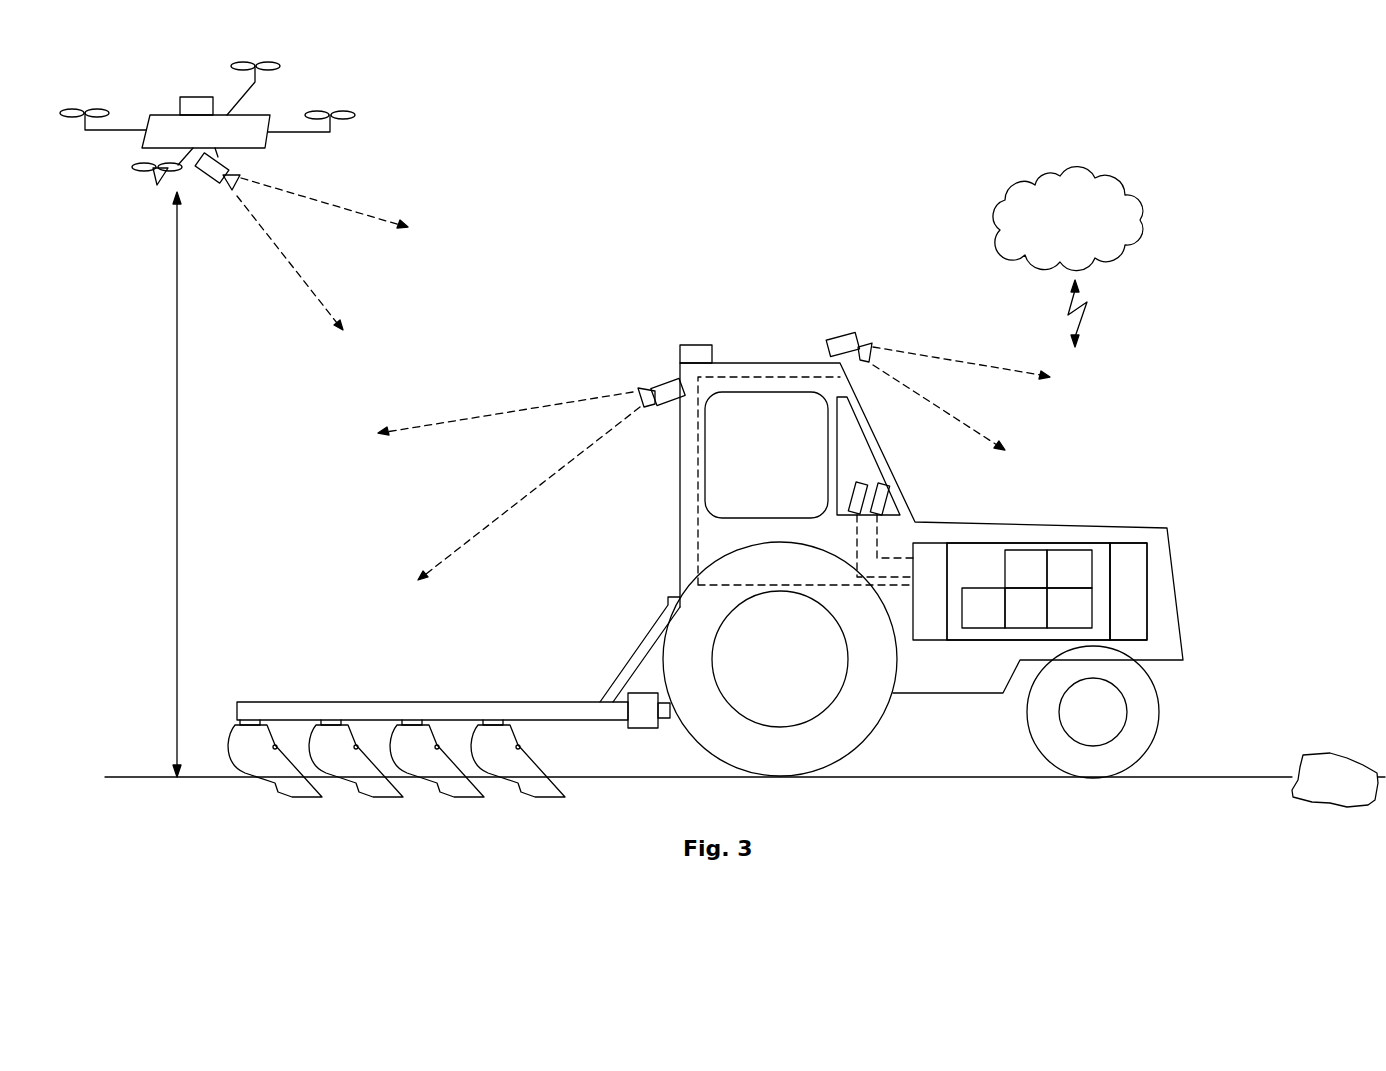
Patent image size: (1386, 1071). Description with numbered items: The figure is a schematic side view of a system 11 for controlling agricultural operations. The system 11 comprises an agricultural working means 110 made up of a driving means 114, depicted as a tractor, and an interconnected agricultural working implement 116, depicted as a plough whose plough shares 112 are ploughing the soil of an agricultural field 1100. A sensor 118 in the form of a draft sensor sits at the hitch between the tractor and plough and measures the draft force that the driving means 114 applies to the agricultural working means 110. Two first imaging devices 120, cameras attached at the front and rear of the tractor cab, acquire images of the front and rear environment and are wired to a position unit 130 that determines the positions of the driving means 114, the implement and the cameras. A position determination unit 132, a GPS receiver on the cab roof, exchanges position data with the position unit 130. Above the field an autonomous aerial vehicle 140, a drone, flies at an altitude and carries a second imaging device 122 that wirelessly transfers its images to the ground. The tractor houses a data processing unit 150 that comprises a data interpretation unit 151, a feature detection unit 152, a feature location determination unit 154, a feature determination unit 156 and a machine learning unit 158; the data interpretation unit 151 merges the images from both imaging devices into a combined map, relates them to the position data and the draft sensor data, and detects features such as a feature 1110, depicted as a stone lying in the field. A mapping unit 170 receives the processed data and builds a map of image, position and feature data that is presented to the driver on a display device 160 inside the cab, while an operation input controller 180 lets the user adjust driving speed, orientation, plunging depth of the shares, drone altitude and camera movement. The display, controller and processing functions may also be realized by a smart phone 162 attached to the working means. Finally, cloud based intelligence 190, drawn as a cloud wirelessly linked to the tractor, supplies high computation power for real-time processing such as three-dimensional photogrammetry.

The system 11 is at (712, 108).
The agricultural working means 110 is at (661, 279).
The plough shares 112 is at (286, 766).
The driving means 114 is at (932, 662).
The agricultural working implement 116 is at (443, 708).
The sensor 118 is at (645, 713).
The first imaging devices 120 is at (663, 392).
The second imaging device 122 is at (217, 168).
The position unit 130 is at (1030, 591).
The position determination unit 132 is at (190, 103).
The autonomous aerial vehicle 140 is at (231, 141).
The data processing unit 150 is at (1028, 591).
The data interpretation unit 151 is at (1026, 569).
The feature detection unit 152 is at (983, 608).
The feature location determination unit 154 is at (1026, 608).
The feature determination unit 156 is at (1069, 608).
The machine learning unit 158 is at (1069, 569).
The display device 160 is at (880, 500).
The smart phone 162 is at (879, 499).
The mapping unit 170 is at (1128, 591).
The operation input controller 180 is at (858, 497).
The cloud based intelligence 190 is at (1068, 257).
The agricultural field 1100 is at (798, 813).
The feature 1110 is at (1335, 780).